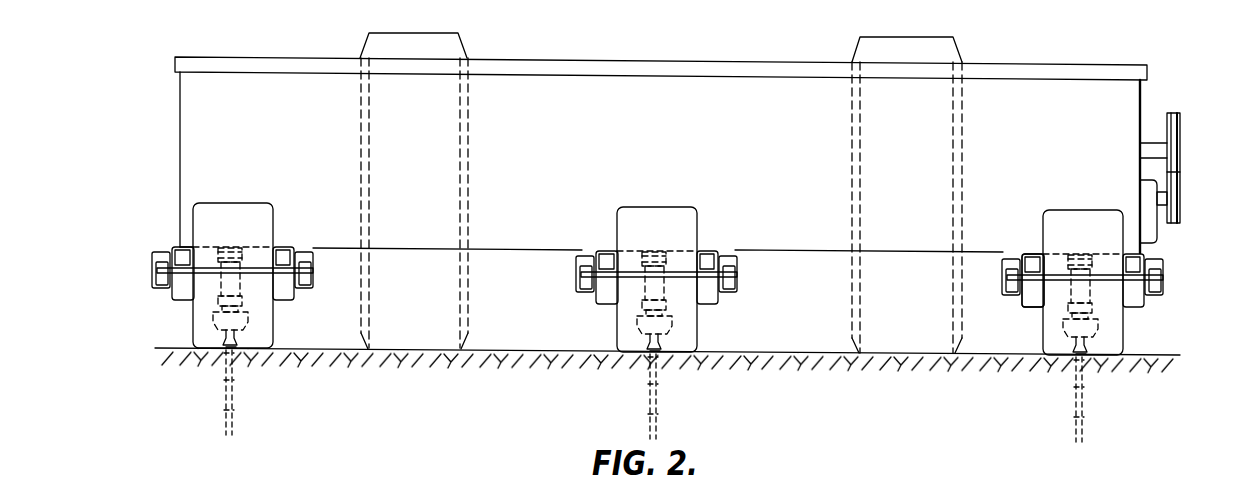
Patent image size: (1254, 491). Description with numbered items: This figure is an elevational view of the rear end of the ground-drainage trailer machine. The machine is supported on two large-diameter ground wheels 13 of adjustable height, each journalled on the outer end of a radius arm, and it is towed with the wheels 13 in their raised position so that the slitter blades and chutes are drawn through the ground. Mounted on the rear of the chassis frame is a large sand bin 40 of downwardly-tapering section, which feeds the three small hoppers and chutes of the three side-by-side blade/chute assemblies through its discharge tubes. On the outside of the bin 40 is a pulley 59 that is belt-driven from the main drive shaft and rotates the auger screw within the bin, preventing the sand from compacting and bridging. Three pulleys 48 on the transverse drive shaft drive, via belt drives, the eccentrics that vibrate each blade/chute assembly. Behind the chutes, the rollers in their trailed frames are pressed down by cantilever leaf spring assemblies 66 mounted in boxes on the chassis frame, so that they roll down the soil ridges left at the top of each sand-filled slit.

The ground wheel 13 is at (450, 45).
The sand bin 40 is at (654, 82).
The pulley 48 is at (1167, 116).
The pulley 59 is at (1180, 200).
The cantilever leaf spring assembly 66 is at (1025, 297).